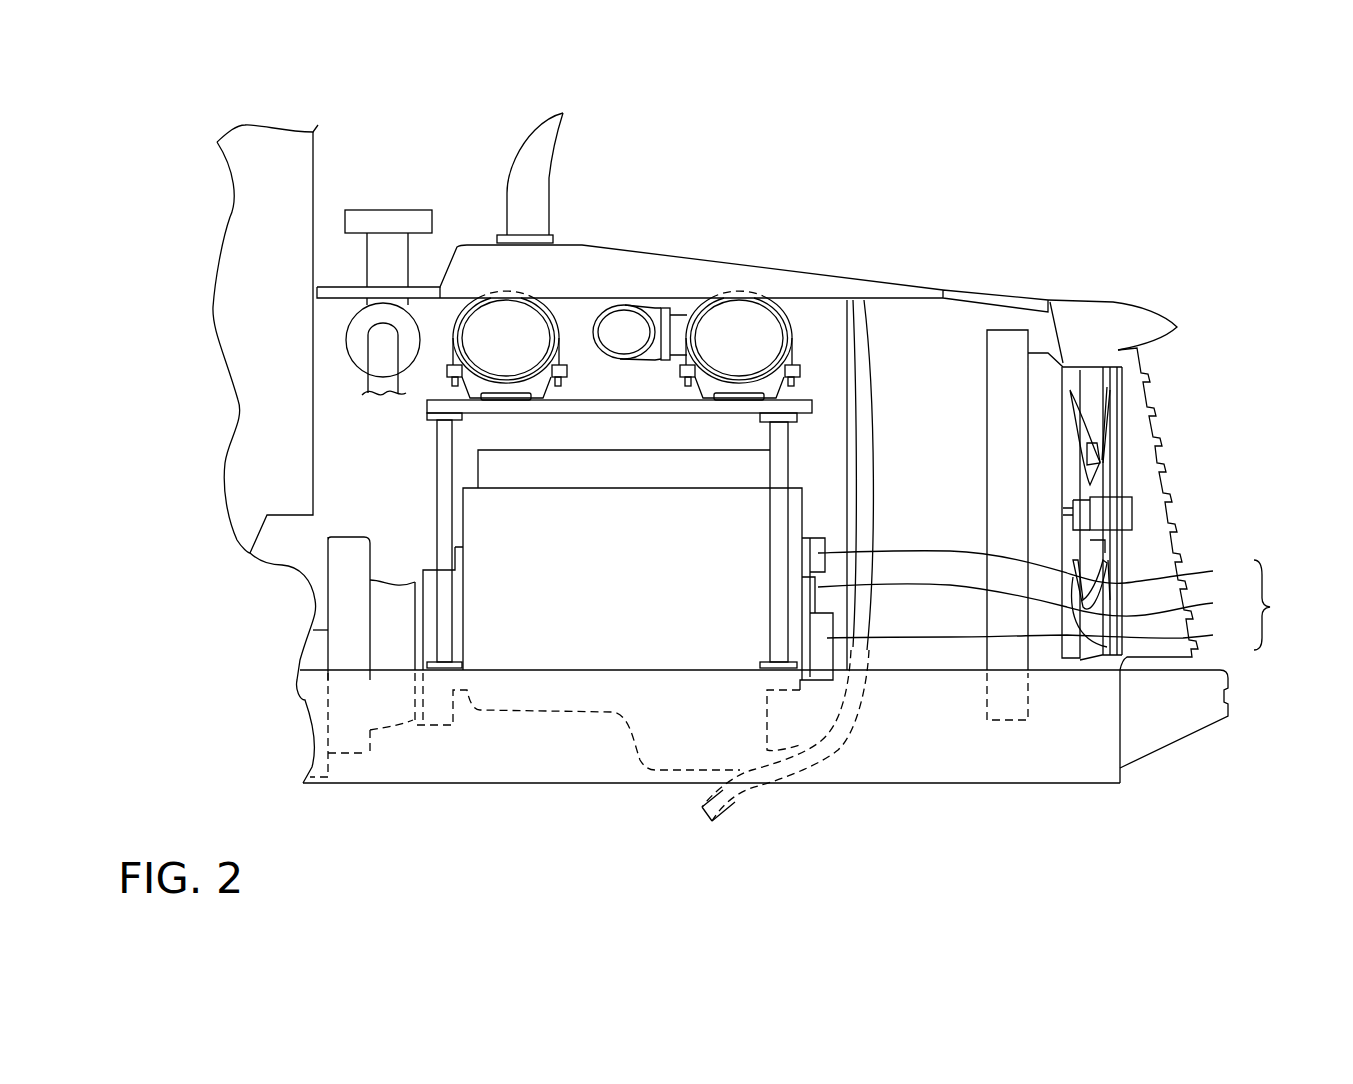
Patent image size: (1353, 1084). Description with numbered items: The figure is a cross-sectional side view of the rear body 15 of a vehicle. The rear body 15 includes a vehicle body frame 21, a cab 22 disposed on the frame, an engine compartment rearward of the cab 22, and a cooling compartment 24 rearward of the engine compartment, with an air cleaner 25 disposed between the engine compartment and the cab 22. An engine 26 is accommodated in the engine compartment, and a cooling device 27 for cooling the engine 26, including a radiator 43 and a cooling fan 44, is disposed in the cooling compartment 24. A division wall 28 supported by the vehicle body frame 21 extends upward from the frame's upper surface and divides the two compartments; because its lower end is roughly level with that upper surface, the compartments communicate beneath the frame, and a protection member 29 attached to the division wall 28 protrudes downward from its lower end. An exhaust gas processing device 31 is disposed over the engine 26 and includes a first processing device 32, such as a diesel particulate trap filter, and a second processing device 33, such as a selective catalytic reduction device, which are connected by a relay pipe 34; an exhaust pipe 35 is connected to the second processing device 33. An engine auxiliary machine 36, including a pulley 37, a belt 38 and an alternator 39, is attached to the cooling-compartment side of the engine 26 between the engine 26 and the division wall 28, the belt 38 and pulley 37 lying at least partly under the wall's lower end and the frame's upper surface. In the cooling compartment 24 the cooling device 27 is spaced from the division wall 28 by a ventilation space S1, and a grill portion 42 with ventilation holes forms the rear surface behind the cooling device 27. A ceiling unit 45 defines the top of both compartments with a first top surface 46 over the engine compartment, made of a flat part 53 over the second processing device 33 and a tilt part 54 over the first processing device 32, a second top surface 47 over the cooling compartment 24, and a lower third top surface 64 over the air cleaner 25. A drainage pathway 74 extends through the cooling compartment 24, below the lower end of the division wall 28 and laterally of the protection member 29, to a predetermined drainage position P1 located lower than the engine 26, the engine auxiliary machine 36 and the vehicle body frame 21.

The rear body 15 is at (998, 186).
The vehicle body frame 21 is at (1120, 725).
The cab 22 is at (313, 147).
The cooling compartment 24 is at (929, 327).
The air cleaner 25 is at (347, 347).
The engine 26 is at (588, 653).
The cooling device 27 is at (1057, 675).
The division wall 28 is at (847, 347).
The protection member 29 is at (862, 698).
The exhaust gas processing device 31 is at (646, 288).
The first processing device 32 is at (733, 290).
The second processing device 33 is at (480, 292).
The relay pipe 34 is at (607, 306).
The exhaust pipe 35 is at (522, 145).
The engine auxiliary machine 36 is at (1281, 605).
The pulley 37 is at (1036, 635).
The belt 38 is at (1031, 602).
The alternator 39 is at (1031, 570).
The grill portion 42 is at (1172, 490).
The radiator 43 is at (1007, 353).
The cooling fan 44 is at (1107, 442).
The ceiling unit 45 is at (701, 205).
The first top surface 46 is at (623, 232).
The second top surface 47 is at (884, 262).
The flat part 53 is at (525, 228).
The tilt part 54 is at (764, 265).
The third top surface 64 is at (350, 285).
The drainage pathway 74 is at (868, 472).
The ventilation space S1 is at (947, 441).
The predetermined drainage position P1 is at (697, 816).